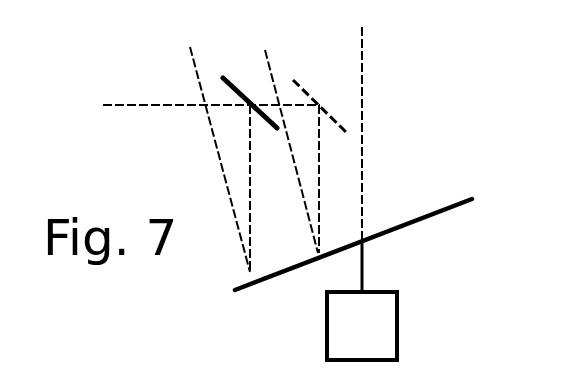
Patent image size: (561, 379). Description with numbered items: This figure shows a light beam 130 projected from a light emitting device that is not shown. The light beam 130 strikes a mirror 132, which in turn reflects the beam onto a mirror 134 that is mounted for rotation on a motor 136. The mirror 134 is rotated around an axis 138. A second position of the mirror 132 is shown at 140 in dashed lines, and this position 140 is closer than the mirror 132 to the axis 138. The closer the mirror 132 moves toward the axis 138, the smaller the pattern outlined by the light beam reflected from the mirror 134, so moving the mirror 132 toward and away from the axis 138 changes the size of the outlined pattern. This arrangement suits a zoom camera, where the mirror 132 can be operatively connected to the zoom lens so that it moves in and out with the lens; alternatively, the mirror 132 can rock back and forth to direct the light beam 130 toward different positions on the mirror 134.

The light beam 130 is at (177, 109).
The mirror 132 is at (230, 80).
The mirror 134 is at (443, 209).
The motor 136 is at (397, 332).
The axis 138 is at (365, 66).
The second position of mirror 140 is at (313, 80).